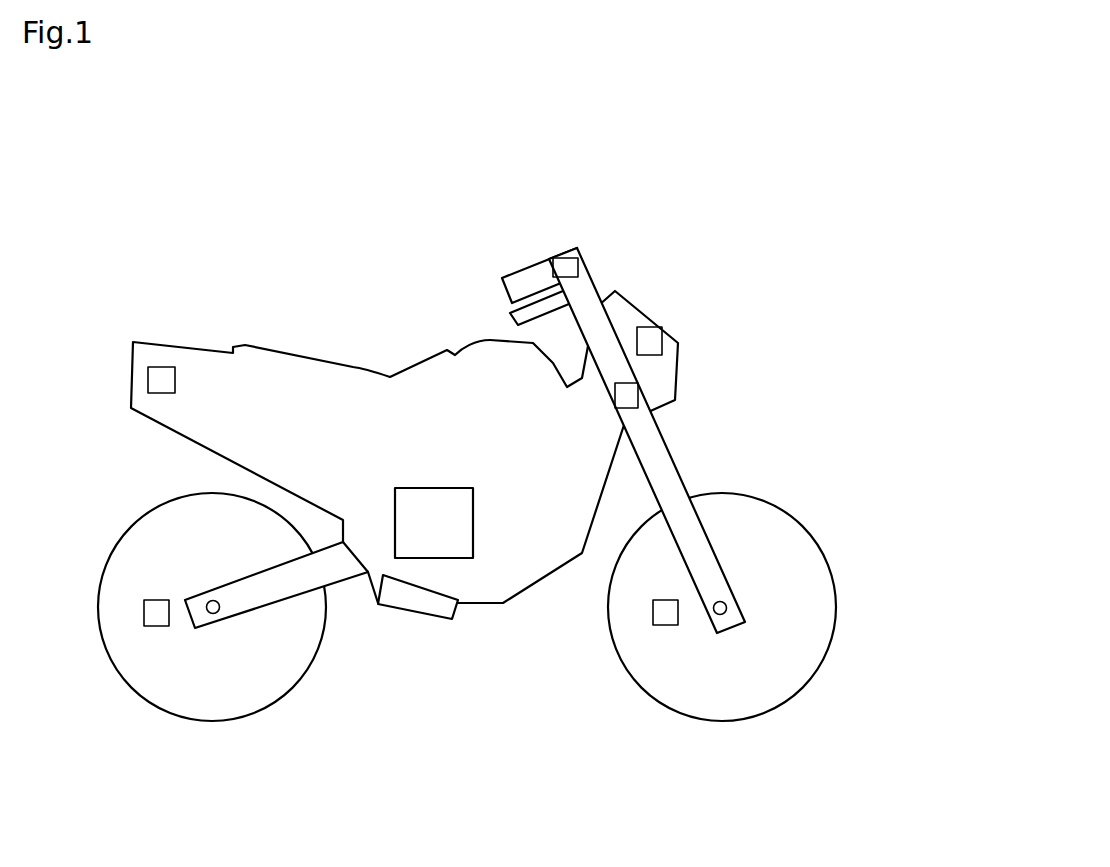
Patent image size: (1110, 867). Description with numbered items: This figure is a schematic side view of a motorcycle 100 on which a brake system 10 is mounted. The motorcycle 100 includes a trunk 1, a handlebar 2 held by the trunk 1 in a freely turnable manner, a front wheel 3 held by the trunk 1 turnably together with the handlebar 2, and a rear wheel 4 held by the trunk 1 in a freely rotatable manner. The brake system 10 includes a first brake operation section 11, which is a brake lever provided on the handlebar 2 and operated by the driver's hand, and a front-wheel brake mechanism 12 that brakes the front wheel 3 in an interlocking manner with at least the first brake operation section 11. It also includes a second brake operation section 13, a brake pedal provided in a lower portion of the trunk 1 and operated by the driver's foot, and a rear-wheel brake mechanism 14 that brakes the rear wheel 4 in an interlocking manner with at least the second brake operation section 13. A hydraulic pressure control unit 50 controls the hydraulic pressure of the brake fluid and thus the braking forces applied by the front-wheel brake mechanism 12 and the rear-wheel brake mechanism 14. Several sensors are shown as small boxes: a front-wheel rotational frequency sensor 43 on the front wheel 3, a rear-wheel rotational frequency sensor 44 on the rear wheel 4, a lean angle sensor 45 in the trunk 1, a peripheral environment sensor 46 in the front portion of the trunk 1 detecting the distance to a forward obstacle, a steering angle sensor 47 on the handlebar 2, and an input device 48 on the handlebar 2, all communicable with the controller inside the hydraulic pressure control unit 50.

The motorcycle 100 is at (823, 115).
The trunk 1 is at (306, 377).
The handlebar 2 is at (519, 282).
The front wheel 3 is at (722, 732).
The rear wheel 4 is at (213, 732).
The brake system 10 is at (710, 417).
The first brake operation section 11 is at (522, 315).
The front-wheel brake mechanism 12 is at (735, 577).
The second brake operation section 13 is at (432, 600).
The rear-wheel brake mechanism 14 is at (193, 588).
The front-wheel rotational frequency sensor 43 is at (663, 612).
The rear-wheel rotational frequency sensor 44 is at (152, 612).
The lean angle sensor 45 is at (162, 374).
The peripheral environment sensor 46 is at (645, 336).
The steering angle sensor 47 is at (633, 393).
The input device 48 is at (568, 268).
The hydraulic pressure control unit 50 is at (418, 485).